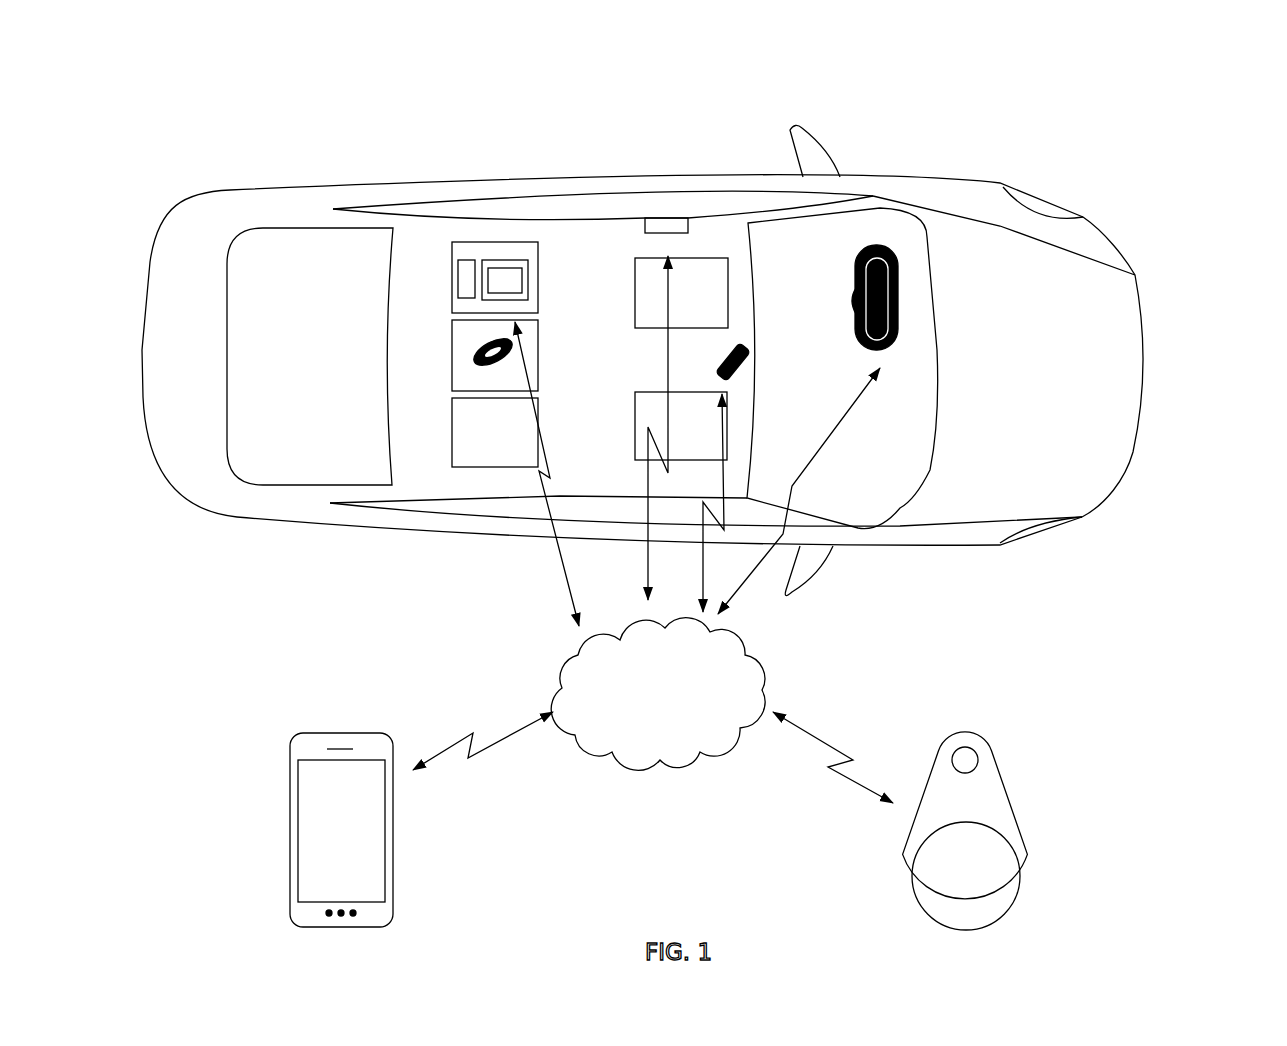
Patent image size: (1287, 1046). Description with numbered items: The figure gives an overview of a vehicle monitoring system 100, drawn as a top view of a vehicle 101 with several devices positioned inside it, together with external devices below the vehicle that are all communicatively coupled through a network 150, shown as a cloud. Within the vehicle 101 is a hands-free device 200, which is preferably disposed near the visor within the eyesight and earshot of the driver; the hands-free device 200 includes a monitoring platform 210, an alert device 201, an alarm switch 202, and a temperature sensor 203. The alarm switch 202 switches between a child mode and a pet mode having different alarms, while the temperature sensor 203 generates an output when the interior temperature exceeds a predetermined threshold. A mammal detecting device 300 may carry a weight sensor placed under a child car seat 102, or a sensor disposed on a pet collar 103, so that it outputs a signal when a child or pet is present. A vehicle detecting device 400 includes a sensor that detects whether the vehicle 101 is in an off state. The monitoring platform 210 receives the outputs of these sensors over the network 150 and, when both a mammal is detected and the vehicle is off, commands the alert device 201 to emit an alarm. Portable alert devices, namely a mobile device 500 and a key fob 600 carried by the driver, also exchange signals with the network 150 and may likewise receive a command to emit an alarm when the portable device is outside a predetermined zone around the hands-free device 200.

The vehicle monitoring system 100 is at (1152, 102).
The vehicle 101 is at (307, 187).
The child car seat 102 is at (492, 257).
The pet collar 103 is at (477, 348).
The network 150 is at (658, 694).
The hands-free device 200 is at (903, 297).
The alert device 201 is at (743, 367).
The alarm switch 202 is at (856, 308).
The temperature sensor 203 is at (860, 330).
The monitoring platform 210 is at (856, 277).
The mammal detecting device 300 is at (512, 267).
The vehicle detecting device 400 is at (668, 217).
The mobile device 500 is at (290, 737).
The key fob 600 is at (998, 747).